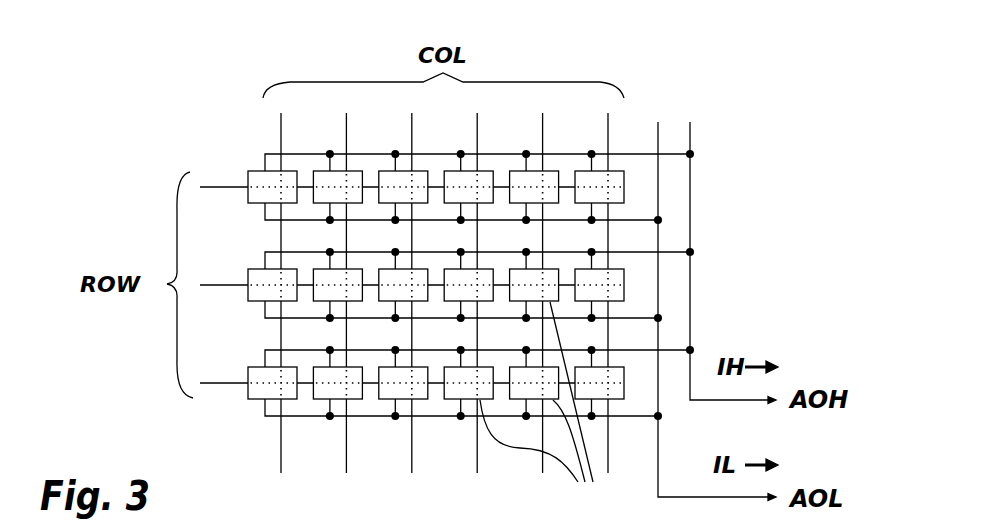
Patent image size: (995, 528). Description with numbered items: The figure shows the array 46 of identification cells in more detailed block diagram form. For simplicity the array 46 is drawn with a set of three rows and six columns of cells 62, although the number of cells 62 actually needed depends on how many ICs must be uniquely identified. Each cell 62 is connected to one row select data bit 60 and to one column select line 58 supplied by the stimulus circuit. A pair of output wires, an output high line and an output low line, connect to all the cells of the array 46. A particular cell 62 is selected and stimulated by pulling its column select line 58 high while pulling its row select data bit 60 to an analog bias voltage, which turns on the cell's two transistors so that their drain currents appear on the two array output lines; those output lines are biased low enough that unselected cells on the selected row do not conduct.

The array 46 is at (486, 273).
The COL select line 58 is at (267, 121).
The ROW select data bit 60 is at (233, 390).
The cell 62 is at (545, 410).